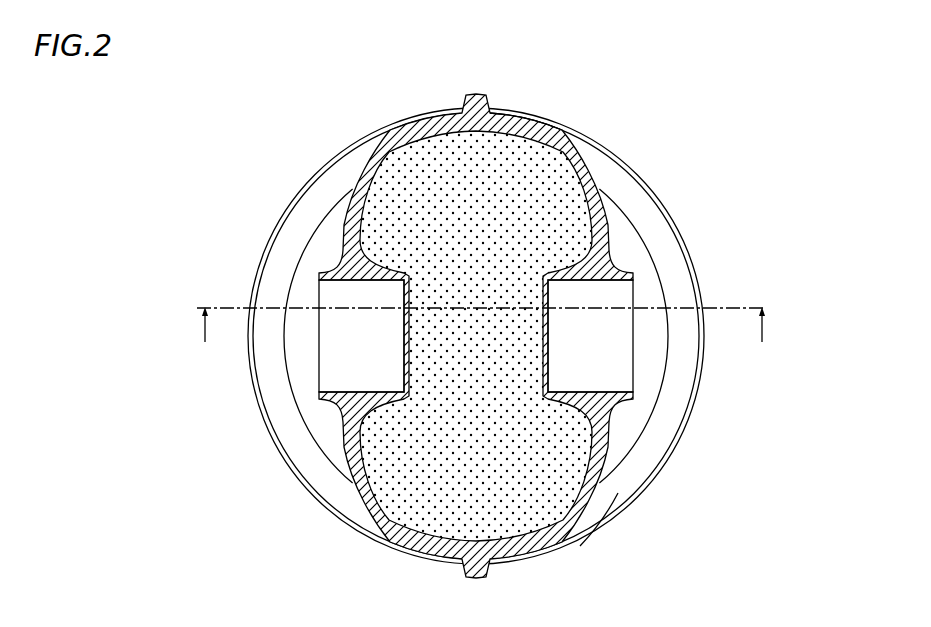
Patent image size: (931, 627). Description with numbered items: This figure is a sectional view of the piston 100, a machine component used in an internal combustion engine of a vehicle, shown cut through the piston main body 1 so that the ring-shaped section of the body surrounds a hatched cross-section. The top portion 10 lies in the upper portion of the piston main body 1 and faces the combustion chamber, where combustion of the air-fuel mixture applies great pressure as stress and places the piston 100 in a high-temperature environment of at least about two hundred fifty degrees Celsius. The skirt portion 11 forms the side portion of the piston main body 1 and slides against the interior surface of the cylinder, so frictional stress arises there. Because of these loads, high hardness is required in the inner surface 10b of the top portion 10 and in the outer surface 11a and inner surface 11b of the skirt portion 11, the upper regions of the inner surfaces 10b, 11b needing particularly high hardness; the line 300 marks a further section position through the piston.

The piston main body 1 is at (600, 503).
The top portion 10 is at (343, 218).
The inner surface of the top portion 10b is at (557, 122).
The skirt portion 11 is at (437, 112).
The outer surface of the skirt portion 11a is at (506, 110).
The inner surface of the skirt portion 11b is at (390, 149).
The piston 100 is at (754, 80).
The section line 300 is at (482, 326).